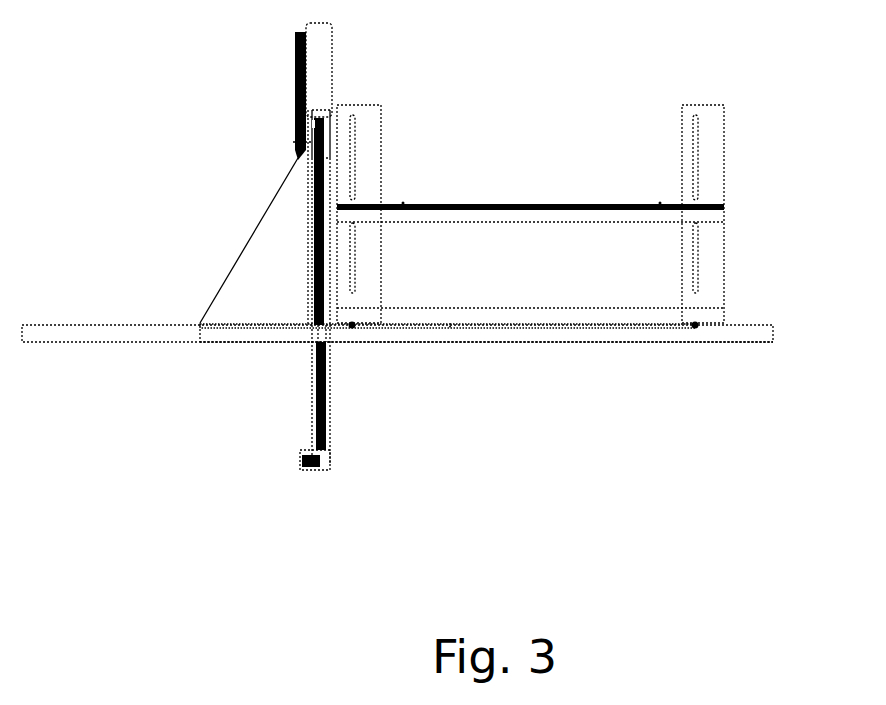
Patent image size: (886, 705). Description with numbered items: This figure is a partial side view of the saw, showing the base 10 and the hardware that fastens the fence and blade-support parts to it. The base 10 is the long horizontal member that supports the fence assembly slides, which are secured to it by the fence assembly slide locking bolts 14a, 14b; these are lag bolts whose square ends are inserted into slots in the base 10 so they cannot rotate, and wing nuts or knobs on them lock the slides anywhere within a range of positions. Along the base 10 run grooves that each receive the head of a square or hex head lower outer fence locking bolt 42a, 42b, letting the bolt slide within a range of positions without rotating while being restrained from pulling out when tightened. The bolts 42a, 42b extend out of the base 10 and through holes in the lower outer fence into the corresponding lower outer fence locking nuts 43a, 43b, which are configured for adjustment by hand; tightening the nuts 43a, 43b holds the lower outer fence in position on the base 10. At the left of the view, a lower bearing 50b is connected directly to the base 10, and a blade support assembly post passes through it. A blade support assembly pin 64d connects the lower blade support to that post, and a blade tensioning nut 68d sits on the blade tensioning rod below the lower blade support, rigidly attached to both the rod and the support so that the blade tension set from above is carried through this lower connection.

The base 10 is at (598, 333).
The fence assembly slide locking bolt 14a is at (693, 342).
The fence assembly slide locking bolt 14b is at (353, 342).
The lower outer fence locking bolt 42a is at (697, 328).
The lower outer fence locking bolt 42b is at (355, 328).
The lower outer fence locking nut 43a is at (695, 325).
The lower outer fence locking nut 43b is at (352, 325).
The lower bearing 50b is at (312, 352).
The blade support assembly pin 64d is at (313, 447).
The blade tensioning nut 68d is at (323, 458).